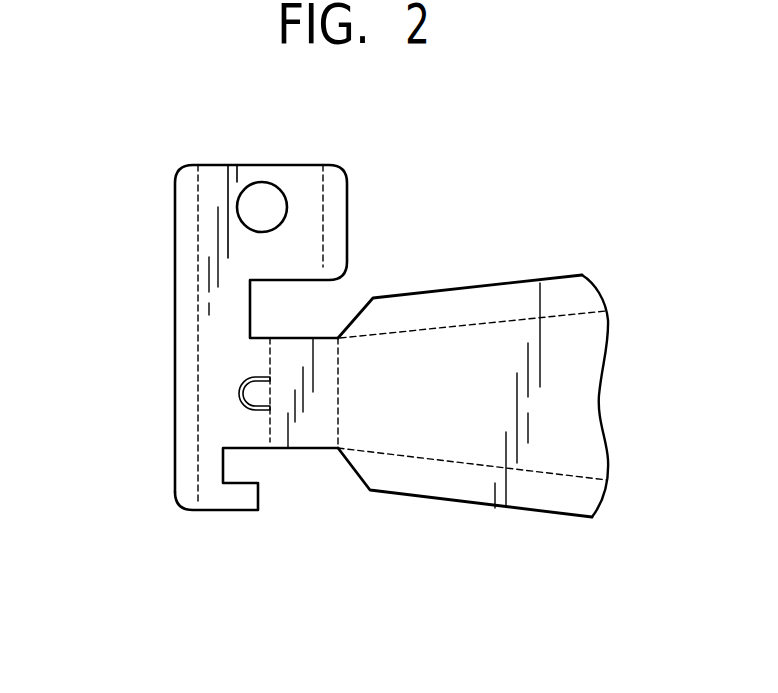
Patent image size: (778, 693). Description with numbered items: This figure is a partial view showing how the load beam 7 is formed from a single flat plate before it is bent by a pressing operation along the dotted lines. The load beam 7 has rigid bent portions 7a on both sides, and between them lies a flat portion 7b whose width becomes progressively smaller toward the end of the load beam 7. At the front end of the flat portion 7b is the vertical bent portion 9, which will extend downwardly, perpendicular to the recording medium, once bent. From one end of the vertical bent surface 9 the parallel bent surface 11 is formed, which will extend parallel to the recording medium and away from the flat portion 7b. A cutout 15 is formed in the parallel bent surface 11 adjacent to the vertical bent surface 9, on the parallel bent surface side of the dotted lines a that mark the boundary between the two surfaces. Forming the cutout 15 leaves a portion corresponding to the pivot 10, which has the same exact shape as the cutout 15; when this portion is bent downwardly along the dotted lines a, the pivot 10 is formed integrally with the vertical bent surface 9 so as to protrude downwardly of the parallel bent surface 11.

The load beam 7 is at (515, 329).
The rigid bent portions 7a is at (582, 293).
The flat portion 7b is at (533, 412).
The vertical bent portion 9 is at (315, 430).
The pivot 10 is at (246, 392).
The parallel bent surface 11 is at (208, 495).
The cutout 15 is at (240, 383).
The dotted lines a is at (273, 336).